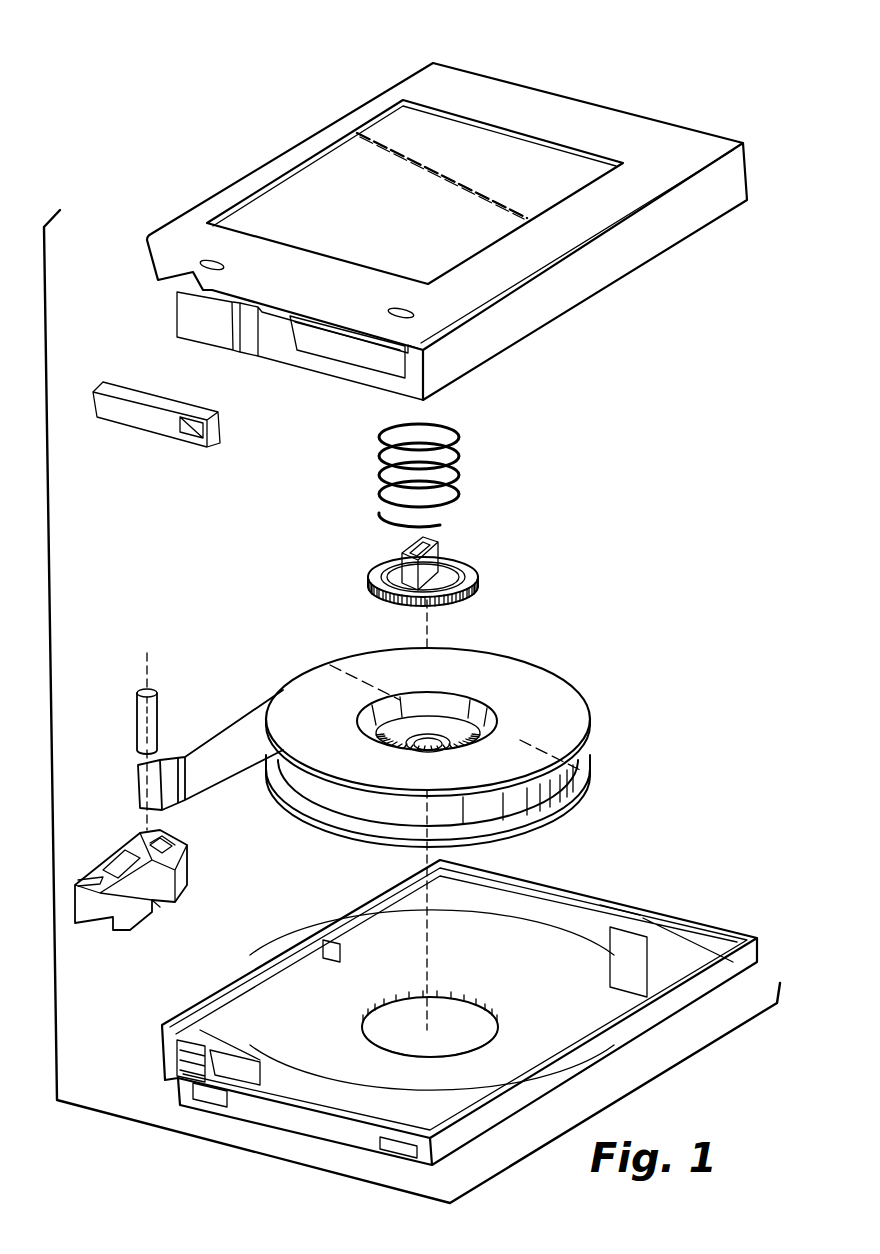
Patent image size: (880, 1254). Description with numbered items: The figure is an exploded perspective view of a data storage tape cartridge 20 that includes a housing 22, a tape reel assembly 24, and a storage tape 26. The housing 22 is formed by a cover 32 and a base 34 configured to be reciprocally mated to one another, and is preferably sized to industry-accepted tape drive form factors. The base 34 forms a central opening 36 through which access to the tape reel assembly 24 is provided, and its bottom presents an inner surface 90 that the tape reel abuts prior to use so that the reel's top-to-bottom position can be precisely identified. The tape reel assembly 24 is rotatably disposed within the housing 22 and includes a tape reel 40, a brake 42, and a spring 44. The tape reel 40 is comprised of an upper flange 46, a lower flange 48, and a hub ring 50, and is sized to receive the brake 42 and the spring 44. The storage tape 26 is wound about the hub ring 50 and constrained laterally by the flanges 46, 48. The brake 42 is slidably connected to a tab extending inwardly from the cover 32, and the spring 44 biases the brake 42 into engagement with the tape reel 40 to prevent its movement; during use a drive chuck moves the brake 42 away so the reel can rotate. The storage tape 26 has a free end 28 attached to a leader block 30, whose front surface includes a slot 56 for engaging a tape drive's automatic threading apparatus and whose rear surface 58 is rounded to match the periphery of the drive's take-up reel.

The data storage tape cartridge 20 is at (714, 67).
The housing 22 is at (719, 113).
The tape reel assembly 24 is at (488, 528).
The storage tape 26 is at (238, 738).
The free end 28 is at (150, 785).
The leader block 30 is at (194, 856).
The cover 32 is at (570, 92).
The base 34 is at (688, 896).
The central opening 36 is at (473, 1003).
The tape reel 40 is at (525, 653).
The brake 42 is at (475, 573).
The spring 44 is at (458, 440).
The upper flange 46 is at (562, 693).
The lower flange 48 is at (577, 773).
The hub ring 50 is at (450, 707).
The slot 56 is at (83, 880).
The rear surface 58 is at (178, 840).
The inner surface 90 is at (283, 997).